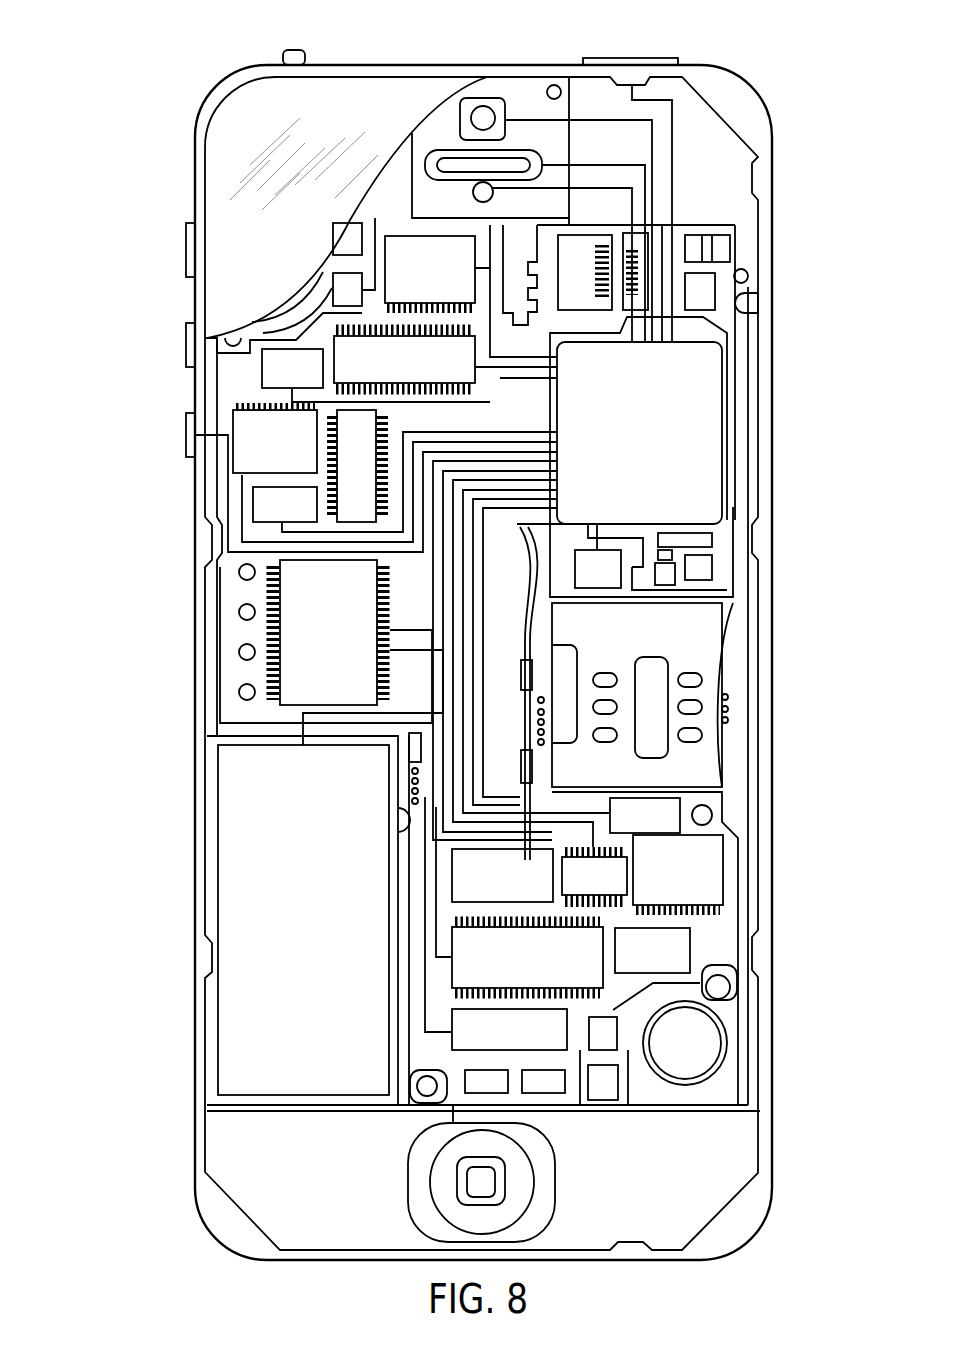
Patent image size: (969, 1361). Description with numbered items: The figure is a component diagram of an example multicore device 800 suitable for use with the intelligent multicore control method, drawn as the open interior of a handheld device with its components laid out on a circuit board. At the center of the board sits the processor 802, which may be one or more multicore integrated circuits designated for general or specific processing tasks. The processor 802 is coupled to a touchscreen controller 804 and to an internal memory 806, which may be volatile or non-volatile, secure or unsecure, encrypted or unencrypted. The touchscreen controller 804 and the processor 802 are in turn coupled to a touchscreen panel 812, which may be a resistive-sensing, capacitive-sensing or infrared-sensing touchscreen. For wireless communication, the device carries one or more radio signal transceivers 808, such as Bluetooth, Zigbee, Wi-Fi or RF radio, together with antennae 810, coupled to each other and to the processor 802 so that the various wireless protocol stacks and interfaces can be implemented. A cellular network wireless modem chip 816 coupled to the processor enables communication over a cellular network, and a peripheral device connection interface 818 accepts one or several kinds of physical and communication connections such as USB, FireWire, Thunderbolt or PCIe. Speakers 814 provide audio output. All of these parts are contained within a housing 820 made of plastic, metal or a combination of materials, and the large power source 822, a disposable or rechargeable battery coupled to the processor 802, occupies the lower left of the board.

The multicore device 800 is at (168, 88).
The processor 802 is at (638, 421).
The touchscreen controller 804 is at (430, 272).
The internal memory 806 is at (404, 359).
The radio signal transceivers 808 is at (683, 250).
The antennae 810 is at (717, 293).
The touchscreen panel 812 is at (222, 178).
The speakers 814 is at (440, 150).
The cellular network wireless modem chip 816 is at (527, 957).
The peripheral device connection interface 818 is at (509, 1029).
The housing 820 is at (772, 1122).
The power source 822 is at (303, 920).